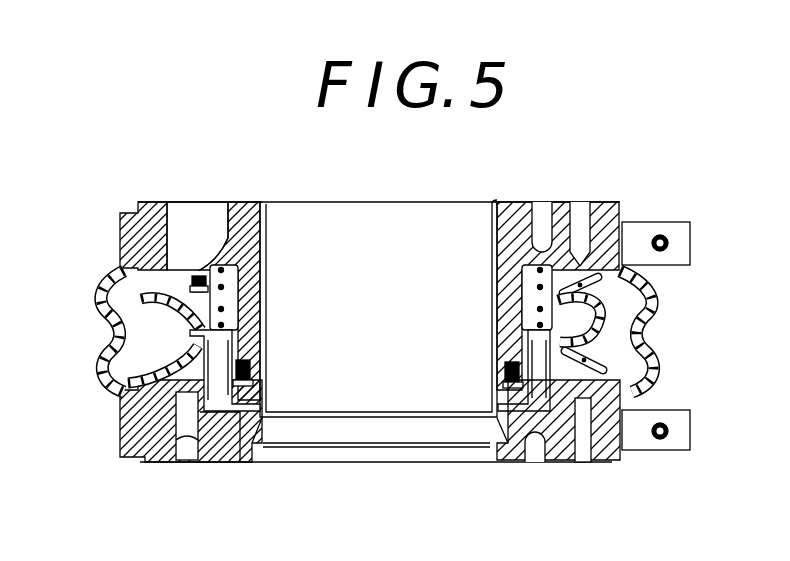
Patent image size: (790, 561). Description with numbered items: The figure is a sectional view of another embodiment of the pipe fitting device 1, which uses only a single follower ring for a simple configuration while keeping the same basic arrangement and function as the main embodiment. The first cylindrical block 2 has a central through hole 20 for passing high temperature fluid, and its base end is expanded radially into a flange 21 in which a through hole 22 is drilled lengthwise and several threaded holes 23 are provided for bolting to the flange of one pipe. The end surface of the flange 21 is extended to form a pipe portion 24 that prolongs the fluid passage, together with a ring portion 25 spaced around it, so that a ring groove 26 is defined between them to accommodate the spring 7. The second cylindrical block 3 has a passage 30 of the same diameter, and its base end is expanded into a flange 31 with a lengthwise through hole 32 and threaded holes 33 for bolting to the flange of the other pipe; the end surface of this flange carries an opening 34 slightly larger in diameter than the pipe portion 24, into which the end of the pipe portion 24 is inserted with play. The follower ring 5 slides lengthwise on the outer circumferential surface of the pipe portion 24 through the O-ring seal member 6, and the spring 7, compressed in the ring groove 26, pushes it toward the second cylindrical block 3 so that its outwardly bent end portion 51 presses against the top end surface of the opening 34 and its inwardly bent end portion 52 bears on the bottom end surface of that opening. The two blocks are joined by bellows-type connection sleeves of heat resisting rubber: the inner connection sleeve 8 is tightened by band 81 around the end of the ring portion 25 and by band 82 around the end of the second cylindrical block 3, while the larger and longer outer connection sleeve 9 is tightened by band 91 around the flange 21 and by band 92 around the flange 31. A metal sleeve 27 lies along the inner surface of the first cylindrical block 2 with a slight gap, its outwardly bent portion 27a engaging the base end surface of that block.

The pipe fitting device 1 is at (550, 160).
The first cylindrical block 2 is at (552, 208).
The second cylindrical block 3 is at (516, 452).
The follower ring 5 is at (245, 347).
The seal member 6 is at (508, 383).
The spring 7 is at (240, 286).
The inner connection sleeve 8 is at (632, 340).
The outer connection sleeve 9 is at (648, 294).
The through hole 20 is at (406, 220).
The flange 21 is at (612, 206).
The through hole 22 is at (200, 215).
The threaded hole 23 is at (586, 200).
The pipe portion 24 is at (512, 322).
The ring portion 25 is at (520, 306).
The ring groove 26 is at (238, 272).
The metal sleeve 27 is at (492, 276).
The bent portion 27a is at (497, 204).
The passage 30 is at (404, 460).
The flange 31 is at (598, 458).
The through hole 32 is at (190, 430).
The threaded hole 33 is at (572, 452).
The opening 34 is at (226, 430).
The outwardly bent end portion 51 is at (248, 312).
The inwardly bent end portion 52 is at (250, 380).
The band 81 is at (112, 306).
The band 82 is at (125, 384).
The band 91 is at (122, 246).
The band 92 is at (122, 440).